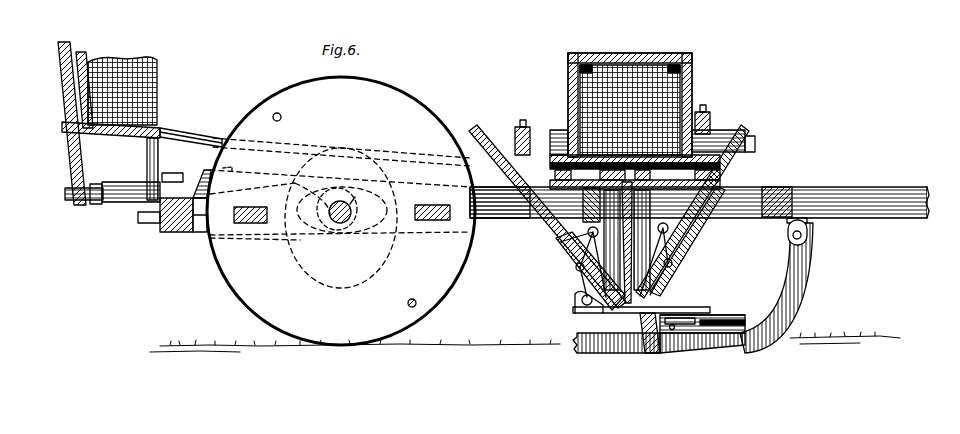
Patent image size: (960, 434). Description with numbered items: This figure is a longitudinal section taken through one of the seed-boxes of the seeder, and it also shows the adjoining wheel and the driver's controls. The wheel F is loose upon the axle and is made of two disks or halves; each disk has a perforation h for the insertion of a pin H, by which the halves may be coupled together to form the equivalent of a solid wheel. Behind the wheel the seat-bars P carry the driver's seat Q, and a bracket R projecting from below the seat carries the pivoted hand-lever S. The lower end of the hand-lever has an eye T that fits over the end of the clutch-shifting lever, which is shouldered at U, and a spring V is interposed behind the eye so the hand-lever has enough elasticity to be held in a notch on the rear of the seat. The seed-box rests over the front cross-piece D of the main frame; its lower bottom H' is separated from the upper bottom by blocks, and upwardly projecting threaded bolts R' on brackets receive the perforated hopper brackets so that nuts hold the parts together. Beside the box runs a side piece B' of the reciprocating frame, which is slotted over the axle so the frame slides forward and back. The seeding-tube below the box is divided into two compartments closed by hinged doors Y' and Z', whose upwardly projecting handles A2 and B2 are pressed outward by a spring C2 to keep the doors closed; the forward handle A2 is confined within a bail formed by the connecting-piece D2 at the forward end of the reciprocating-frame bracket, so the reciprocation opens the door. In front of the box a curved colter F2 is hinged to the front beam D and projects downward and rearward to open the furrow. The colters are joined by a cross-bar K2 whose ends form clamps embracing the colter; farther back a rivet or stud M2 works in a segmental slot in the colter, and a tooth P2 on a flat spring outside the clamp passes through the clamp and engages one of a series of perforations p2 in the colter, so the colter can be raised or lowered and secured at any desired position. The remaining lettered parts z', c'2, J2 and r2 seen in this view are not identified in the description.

The hand-lever S is at (69, 123).
The driver's seat Q is at (127, 90).
The bracket R is at (142, 139).
The spring V is at (104, 186).
The shoulder U is at (105, 202).
The eye T is at (66, 203).
The wheel F is at (341, 211).
The perforation h is at (373, 254).
The pin H is at (340, 216).
The front cross-piece D is at (699, 194).
The lower bottom H' is at (771, 196).
The seat-bars P is at (630, 105).
The slide plate z' is at (635, 172).
The threaded rods or bolts R' is at (635, 129).
The connecting-pieces D2 is at (750, 133).
The handle A2 is at (690, 243).
The handle B2 is at (556, 242).
The side piece B' is at (500, 221).
The spring C2 is at (581, 260).
The pivot link c'2 is at (663, 258).
The hinged cover or door Y' is at (643, 242).
The hinged cover or door Z' is at (641, 313).
The colter F2 is at (776, 286).
The runner J2 is at (585, 353).
The pivot piece r2 is at (665, 350).
The perforations p2 is at (714, 352).
The cross-bar K2 is at (702, 310).
The tooth P2 is at (722, 310).
The rivet or stud M2 is at (680, 323).